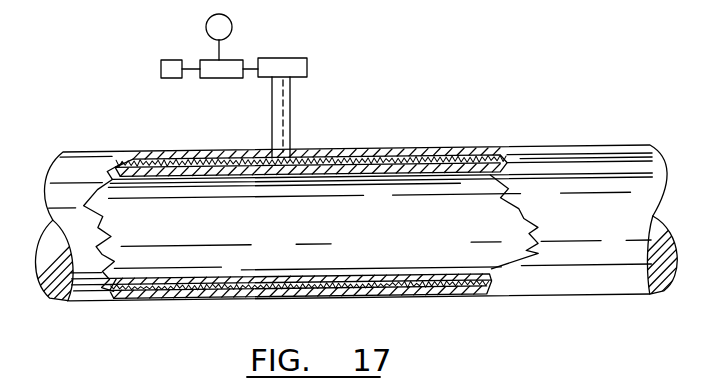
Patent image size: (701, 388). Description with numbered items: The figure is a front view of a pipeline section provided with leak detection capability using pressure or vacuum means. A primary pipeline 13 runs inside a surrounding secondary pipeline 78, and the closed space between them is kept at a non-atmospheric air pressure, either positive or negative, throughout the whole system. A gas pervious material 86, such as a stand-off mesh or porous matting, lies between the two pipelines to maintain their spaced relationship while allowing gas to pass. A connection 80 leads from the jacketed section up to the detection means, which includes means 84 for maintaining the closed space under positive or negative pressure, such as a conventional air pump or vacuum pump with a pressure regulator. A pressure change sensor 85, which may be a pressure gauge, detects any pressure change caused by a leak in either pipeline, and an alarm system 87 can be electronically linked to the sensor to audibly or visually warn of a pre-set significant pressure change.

The pipeline 13 is at (226, 283).
The secondary pipeline 78 is at (424, 152).
The vent pipe 80 is at (276, 113).
The means for maintaining the closed space under a positive or negative pressure 84 is at (213, 73).
The pressure change sensor 85 is at (231, 26).
The gas pervious material 86 is at (410, 297).
The alarm system 87 is at (163, 79).